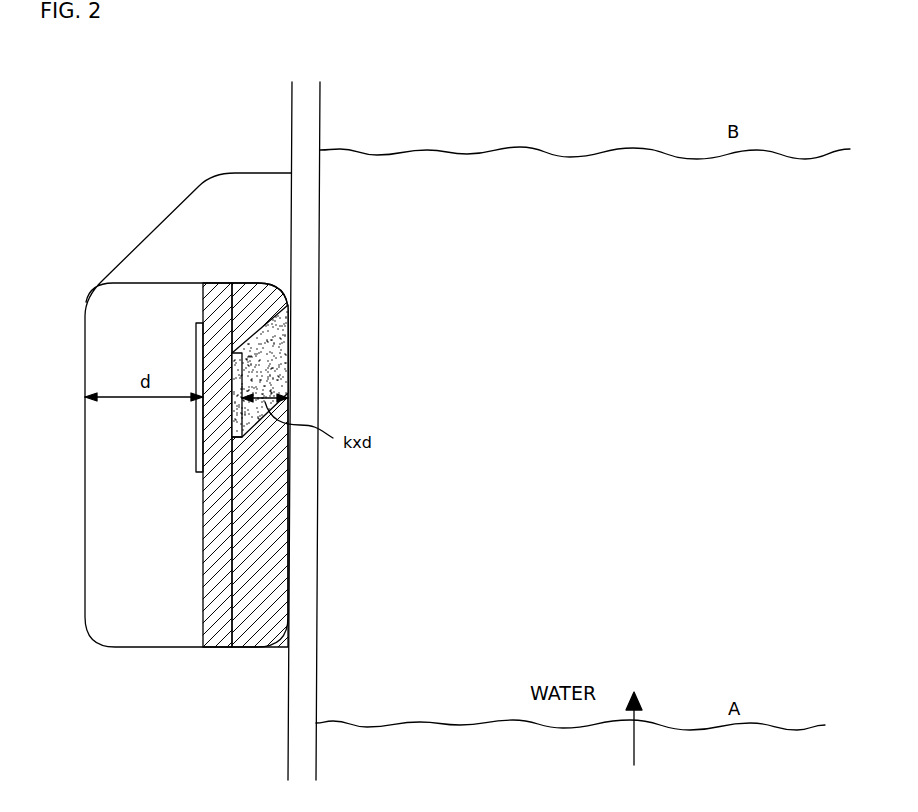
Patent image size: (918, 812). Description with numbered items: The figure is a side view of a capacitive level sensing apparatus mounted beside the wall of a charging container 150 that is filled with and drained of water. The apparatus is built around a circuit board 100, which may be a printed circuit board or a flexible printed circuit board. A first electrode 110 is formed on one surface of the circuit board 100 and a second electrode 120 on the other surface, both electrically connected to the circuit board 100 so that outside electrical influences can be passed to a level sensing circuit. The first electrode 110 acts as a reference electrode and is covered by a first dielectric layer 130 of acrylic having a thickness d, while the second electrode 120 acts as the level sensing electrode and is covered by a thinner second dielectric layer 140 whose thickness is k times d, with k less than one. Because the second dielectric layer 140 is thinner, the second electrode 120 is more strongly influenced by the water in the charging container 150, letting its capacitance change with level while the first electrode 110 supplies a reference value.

The circuit board 100 is at (215, 290).
The first electrode 110 is at (202, 450).
The second electrode 120 is at (268, 363).
The first dielectric layer 130 is at (138, 637).
The second dielectric layer 140 is at (262, 635).
The charging container 150 is at (305, 242).